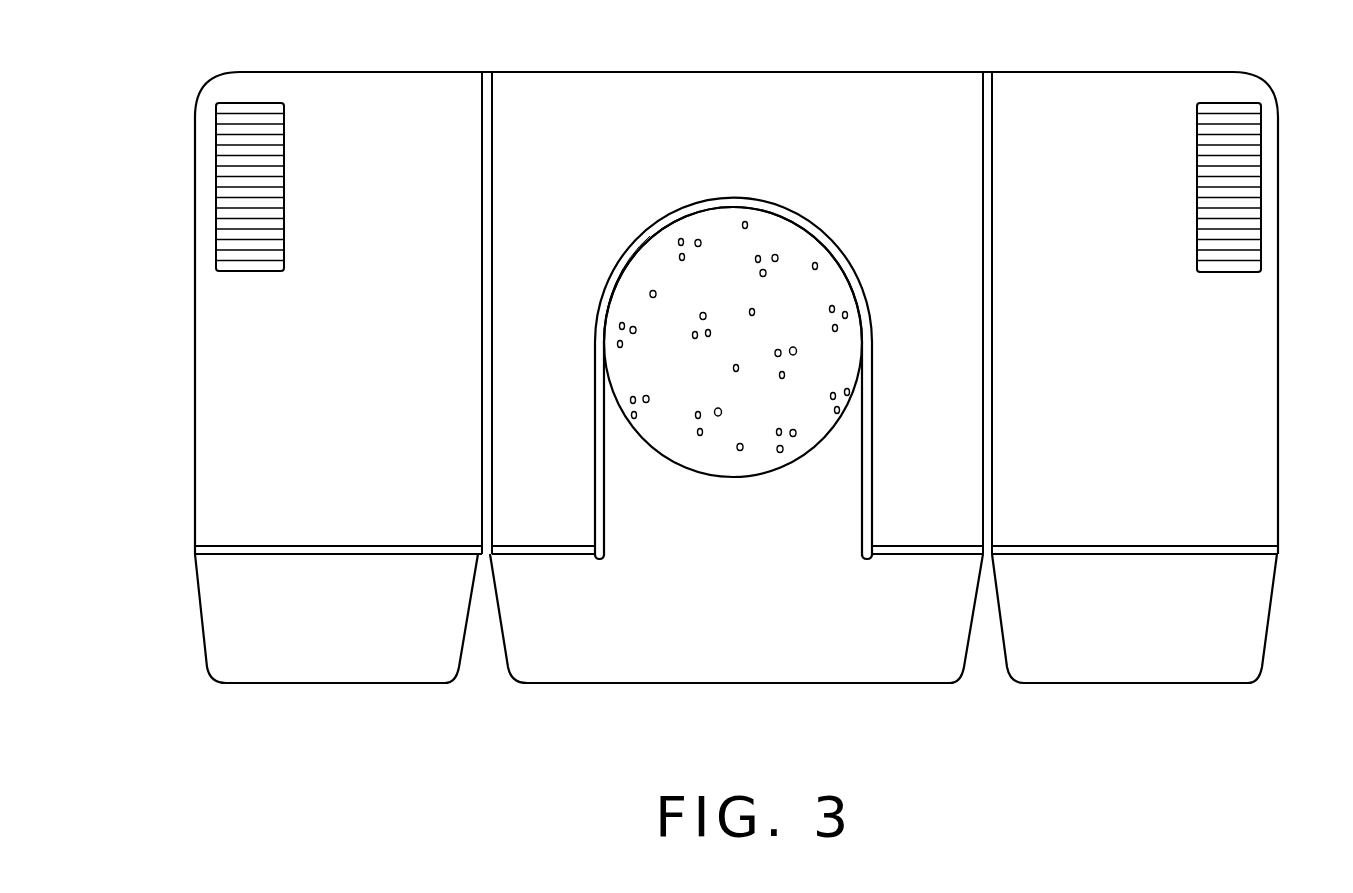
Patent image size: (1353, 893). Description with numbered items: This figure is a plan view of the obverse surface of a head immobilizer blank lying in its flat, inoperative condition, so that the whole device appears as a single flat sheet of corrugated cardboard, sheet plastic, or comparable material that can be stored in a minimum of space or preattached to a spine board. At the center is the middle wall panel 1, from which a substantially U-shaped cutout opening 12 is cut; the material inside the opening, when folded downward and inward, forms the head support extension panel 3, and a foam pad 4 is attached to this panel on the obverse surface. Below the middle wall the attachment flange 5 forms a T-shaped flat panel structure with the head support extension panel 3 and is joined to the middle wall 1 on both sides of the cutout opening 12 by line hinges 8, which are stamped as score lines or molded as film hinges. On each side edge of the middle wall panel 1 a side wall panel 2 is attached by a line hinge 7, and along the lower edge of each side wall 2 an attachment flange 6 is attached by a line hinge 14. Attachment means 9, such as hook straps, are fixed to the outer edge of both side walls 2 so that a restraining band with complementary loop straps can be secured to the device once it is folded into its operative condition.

The middle wall panel 1 is at (717, 90).
The side wall panel 2 is at (396, 88).
The head support extension panel 3 is at (848, 490).
The foam pad 4 is at (795, 266).
The attachment flange 5 is at (745, 640).
The attachment flange for side wall 6 is at (326, 655).
The line hinge 7 is at (490, 260).
The line hinge 8 is at (545, 552).
The attachment means 9 is at (228, 183).
The cutout opening 12 is at (614, 284).
The line hinge 14 is at (220, 548).